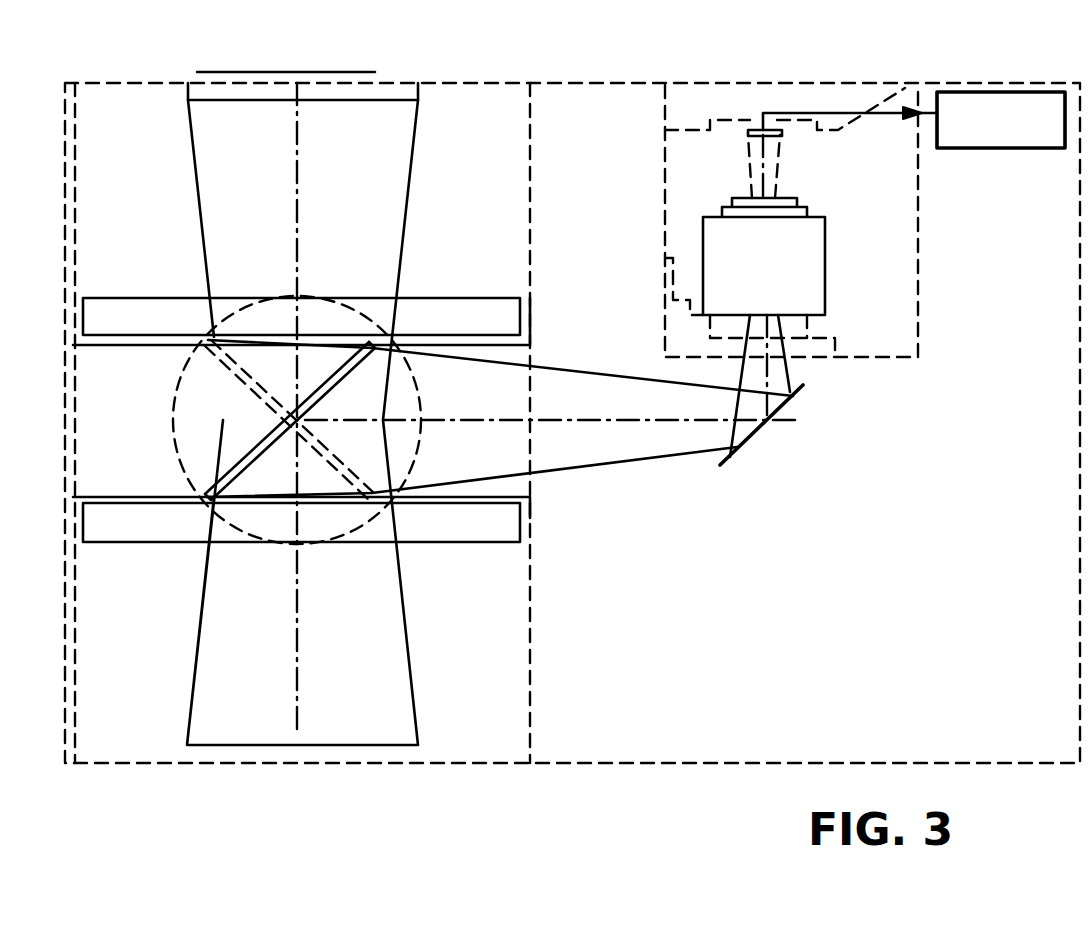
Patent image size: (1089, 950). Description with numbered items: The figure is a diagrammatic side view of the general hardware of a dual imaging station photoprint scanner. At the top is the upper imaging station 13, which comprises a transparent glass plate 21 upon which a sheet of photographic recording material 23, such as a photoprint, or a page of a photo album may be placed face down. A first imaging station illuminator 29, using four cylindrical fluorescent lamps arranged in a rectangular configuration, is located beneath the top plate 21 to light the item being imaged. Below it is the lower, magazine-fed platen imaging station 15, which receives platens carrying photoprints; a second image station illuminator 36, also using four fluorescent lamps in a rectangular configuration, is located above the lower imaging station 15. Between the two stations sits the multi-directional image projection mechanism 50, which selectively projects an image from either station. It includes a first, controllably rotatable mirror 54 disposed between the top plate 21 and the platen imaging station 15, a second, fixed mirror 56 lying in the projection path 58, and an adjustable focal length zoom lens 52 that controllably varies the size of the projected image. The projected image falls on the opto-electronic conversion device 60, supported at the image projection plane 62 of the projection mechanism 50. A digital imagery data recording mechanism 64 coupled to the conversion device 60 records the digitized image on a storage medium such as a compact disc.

The upper imaging station 13 is at (438, 83).
The lower imaging station 15 is at (390, 768).
The transparent plate 21 is at (215, 98).
The sheet of photographic recording material 23 is at (296, 72).
The first imaging station illuminator 29 is at (517, 298).
The second image station illuminator 36 is at (467, 542).
The multi-directional image projection mechanism 50 is at (635, 508).
The zoom lens 52 is at (828, 228).
The rotatable mirror 54 is at (234, 466).
The fixed mirror 56 is at (757, 428).
The projection path 58 is at (590, 418).
The opto-electronic conversion device 60 is at (752, 130).
The image projection plane 62 is at (750, 150).
The digital imagery data recording mechanism 64 is at (990, 140).